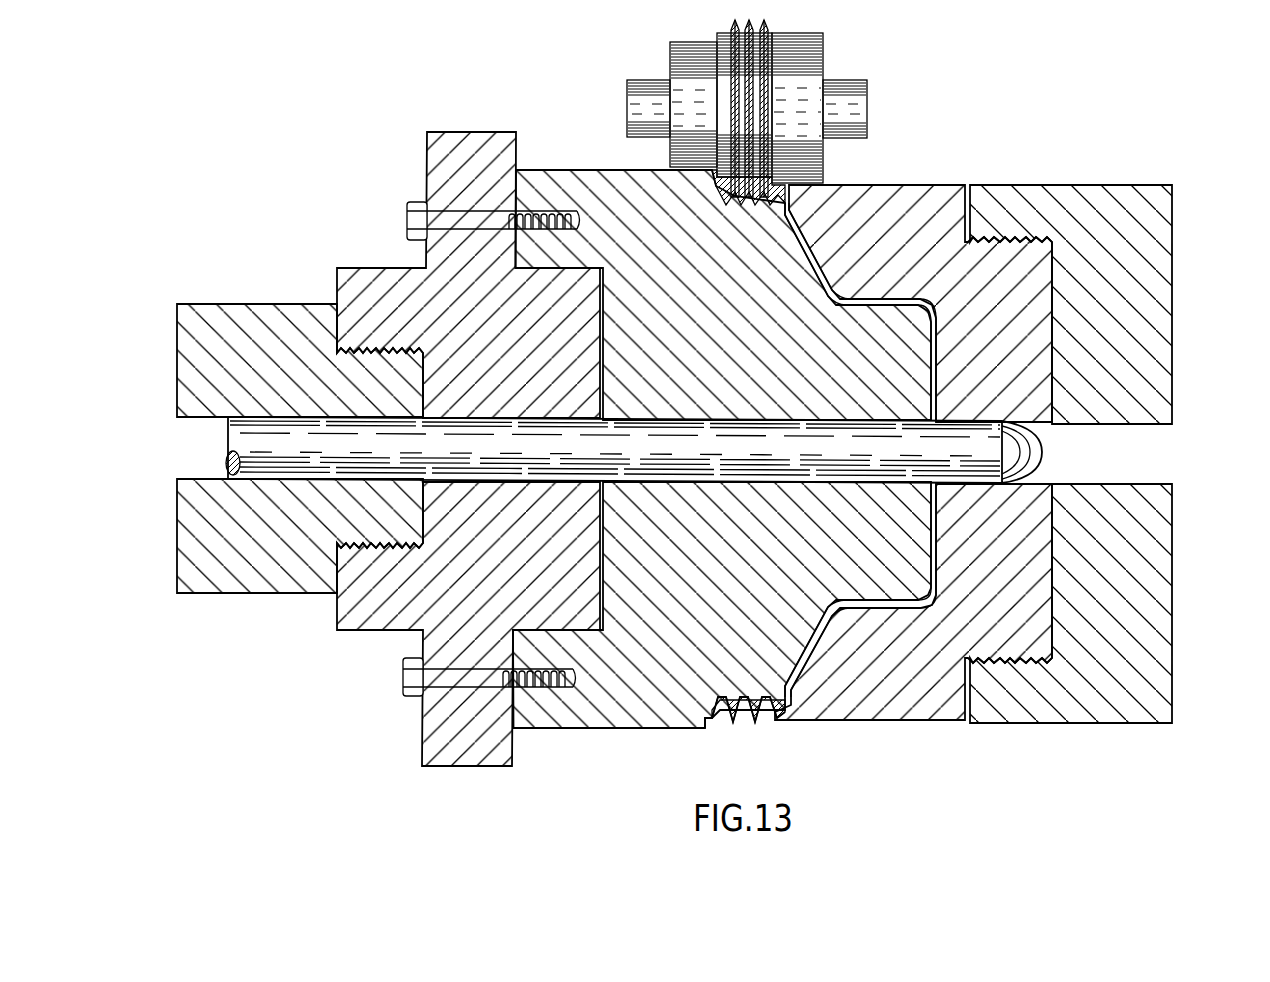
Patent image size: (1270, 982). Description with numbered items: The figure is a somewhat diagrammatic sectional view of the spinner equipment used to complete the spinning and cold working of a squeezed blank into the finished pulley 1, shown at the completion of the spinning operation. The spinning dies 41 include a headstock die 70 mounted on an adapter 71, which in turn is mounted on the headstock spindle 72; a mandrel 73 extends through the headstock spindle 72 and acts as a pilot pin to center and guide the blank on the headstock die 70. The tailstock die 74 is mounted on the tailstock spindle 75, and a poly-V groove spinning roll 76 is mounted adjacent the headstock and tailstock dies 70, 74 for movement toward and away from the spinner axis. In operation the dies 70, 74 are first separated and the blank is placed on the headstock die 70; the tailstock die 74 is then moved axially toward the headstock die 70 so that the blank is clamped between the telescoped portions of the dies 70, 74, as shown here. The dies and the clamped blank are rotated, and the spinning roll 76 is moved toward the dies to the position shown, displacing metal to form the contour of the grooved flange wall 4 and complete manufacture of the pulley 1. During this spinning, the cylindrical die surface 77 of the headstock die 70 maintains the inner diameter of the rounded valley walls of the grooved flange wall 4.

The spinning dies 41 is at (348, 212).
The headstock die 70 is at (563, 188).
The adapter 71 is at (487, 738).
The headstock spindle 72 is at (271, 642).
The mandrel 73 is at (257, 440).
The tailstock die 74 is at (935, 220).
The tailstock spindle 75 is at (1118, 215).
The poly-V groove spinning roll 76 is at (840, 97).
The cylindrical die surface 77 is at (752, 693).
The pulley 1 is at (822, 273).
The grooved flange wall 4 is at (755, 724).